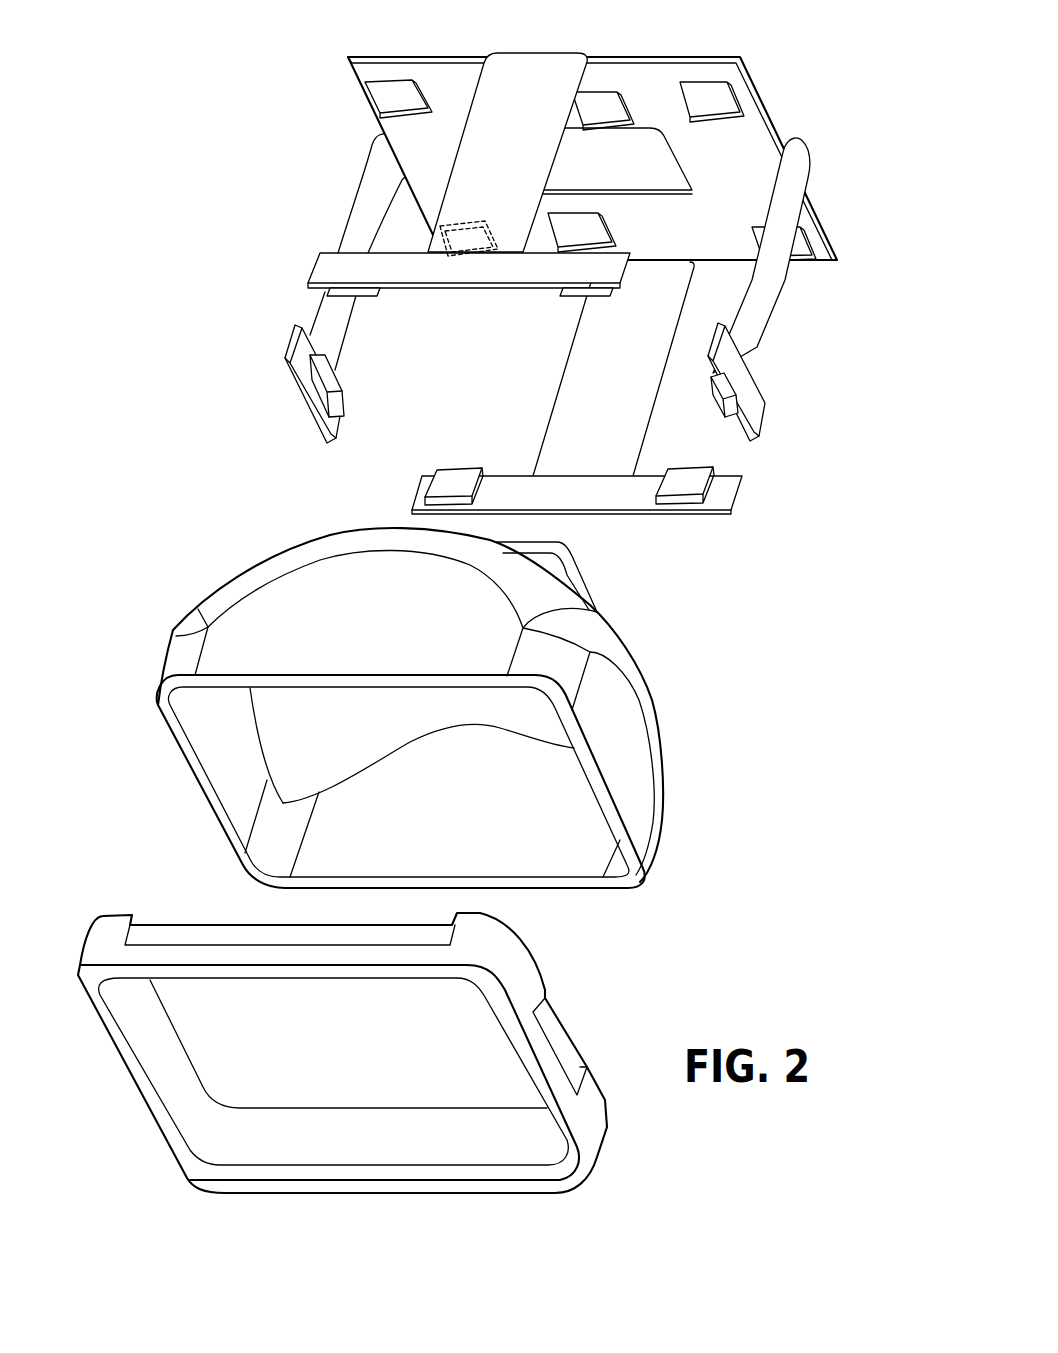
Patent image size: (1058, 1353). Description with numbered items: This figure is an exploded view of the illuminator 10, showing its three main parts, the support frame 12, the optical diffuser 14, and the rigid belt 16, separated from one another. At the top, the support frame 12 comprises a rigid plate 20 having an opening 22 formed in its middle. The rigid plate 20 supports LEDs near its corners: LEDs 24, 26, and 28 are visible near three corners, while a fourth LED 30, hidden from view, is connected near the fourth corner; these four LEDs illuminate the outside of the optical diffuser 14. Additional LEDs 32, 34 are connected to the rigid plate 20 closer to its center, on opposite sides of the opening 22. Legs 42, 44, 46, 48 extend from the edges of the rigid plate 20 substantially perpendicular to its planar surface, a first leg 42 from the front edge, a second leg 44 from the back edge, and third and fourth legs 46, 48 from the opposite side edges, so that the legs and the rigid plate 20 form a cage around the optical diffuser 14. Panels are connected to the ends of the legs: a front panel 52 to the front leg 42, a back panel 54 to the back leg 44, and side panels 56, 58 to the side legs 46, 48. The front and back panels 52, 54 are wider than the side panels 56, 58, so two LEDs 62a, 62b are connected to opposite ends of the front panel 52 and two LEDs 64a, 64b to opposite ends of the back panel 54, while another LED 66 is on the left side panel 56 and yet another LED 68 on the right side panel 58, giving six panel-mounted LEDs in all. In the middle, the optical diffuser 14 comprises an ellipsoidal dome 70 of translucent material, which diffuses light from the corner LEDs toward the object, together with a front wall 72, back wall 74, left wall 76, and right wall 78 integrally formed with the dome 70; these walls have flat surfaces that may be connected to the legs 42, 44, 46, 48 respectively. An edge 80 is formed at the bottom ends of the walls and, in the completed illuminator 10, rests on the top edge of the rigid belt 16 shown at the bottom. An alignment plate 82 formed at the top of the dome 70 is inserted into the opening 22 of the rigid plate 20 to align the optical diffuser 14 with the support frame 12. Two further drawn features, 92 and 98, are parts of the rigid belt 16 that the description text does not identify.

The illuminator 10 is at (469, 613).
The support frame 12 is at (538, 290).
The optical diffuser 14 is at (440, 705).
The rigid belt 16 is at (401, 1033).
The rigid plate 20 is at (565, 184).
The opening 22 is at (677, 167).
The LED 24 is at (383, 93).
The LED 26 is at (735, 102).
The LED 28 is at (813, 252).
The fourth LED 30 is at (470, 226).
The LED 32 is at (622, 107).
The LED 34 is at (607, 218).
The first leg 42 is at (493, 97).
The second leg 44 is at (588, 410).
The third leg 46 is at (343, 223).
The fourth leg 48 is at (762, 312).
The front panel 52 is at (427, 305).
The back panel 54 is at (618, 481).
The left side panel 56 is at (320, 384).
The right side panel 58 is at (753, 382).
The LED 62a is at (370, 294).
The LED 62b is at (577, 297).
The LED 64a is at (453, 477).
The LED 64b is at (683, 483).
The LED 66 is at (333, 383).
The LED 68 is at (718, 403).
The dome 70 is at (260, 562).
The front wall 72 is at (350, 632).
The back wall 74 is at (483, 833).
The left wall 76 is at (218, 723).
The right wall 78 is at (620, 738).
The edge 80 is at (208, 800).
The alignment plate 82 is at (570, 567).
The rear wall 92 is at (217, 932).
The slot 98 is at (550, 1033).